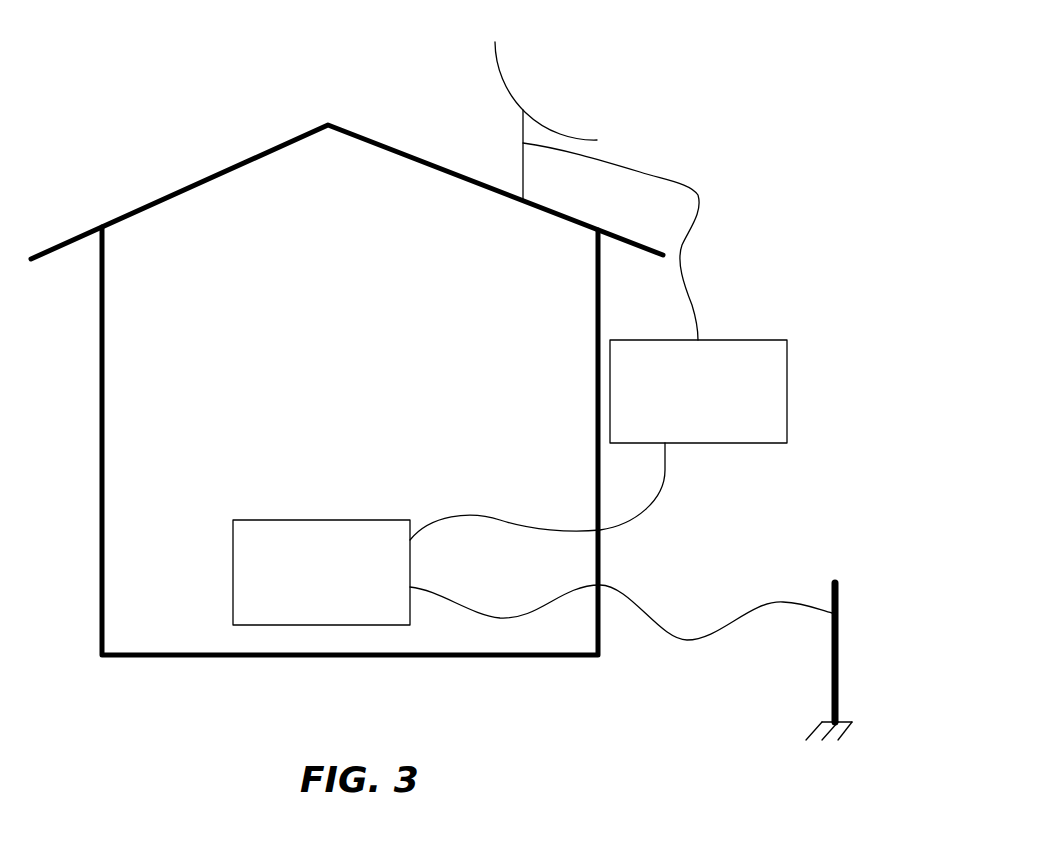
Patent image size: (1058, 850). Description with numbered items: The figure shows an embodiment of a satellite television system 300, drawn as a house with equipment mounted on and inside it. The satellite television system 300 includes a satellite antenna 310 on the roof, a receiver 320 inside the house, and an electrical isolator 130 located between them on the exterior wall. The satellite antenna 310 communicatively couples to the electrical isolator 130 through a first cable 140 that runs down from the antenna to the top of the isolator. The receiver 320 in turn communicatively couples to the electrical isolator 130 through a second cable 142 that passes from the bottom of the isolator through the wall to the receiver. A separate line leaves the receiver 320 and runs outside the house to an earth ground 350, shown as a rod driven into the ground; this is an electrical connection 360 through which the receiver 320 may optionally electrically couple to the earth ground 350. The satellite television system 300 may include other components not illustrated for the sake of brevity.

The satellite television system 300 is at (781, 163).
The satellite antenna 310 is at (527, 168).
The first cable 140 is at (678, 263).
The electrical isolator 130 is at (677, 421).
The second cable 142 is at (632, 512).
The receiver 320 is at (297, 599).
The electrical connection 360 is at (712, 638).
The earth ground 350 is at (838, 670).